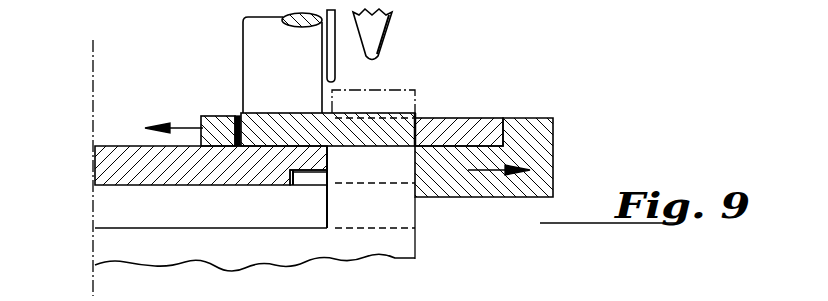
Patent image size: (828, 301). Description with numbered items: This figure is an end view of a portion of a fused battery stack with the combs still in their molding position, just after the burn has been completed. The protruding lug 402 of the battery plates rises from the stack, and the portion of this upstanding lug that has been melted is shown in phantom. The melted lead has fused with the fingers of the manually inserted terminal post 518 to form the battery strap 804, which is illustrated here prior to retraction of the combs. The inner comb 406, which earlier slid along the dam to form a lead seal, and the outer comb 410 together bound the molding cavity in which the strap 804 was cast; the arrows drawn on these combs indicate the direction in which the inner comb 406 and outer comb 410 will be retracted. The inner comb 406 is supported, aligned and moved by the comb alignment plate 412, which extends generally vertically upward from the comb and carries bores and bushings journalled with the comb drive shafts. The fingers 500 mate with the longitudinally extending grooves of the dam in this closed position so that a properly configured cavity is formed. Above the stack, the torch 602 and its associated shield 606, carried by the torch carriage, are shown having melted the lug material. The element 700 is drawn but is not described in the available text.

The negative lug 402 is at (387, 170).
The inner comb 406 is at (228, 130).
The outer comb 410 is at (540, 153).
The comb alignment plate 412 is at (110, 170).
The fingers 500 is at (312, 180).
The post 518 is at (262, 60).
The torch 602 is at (375, 45).
The shield 606 is at (335, 45).
The workpiece body 700 is at (135, 214).
The battery strap 804 is at (387, 132).